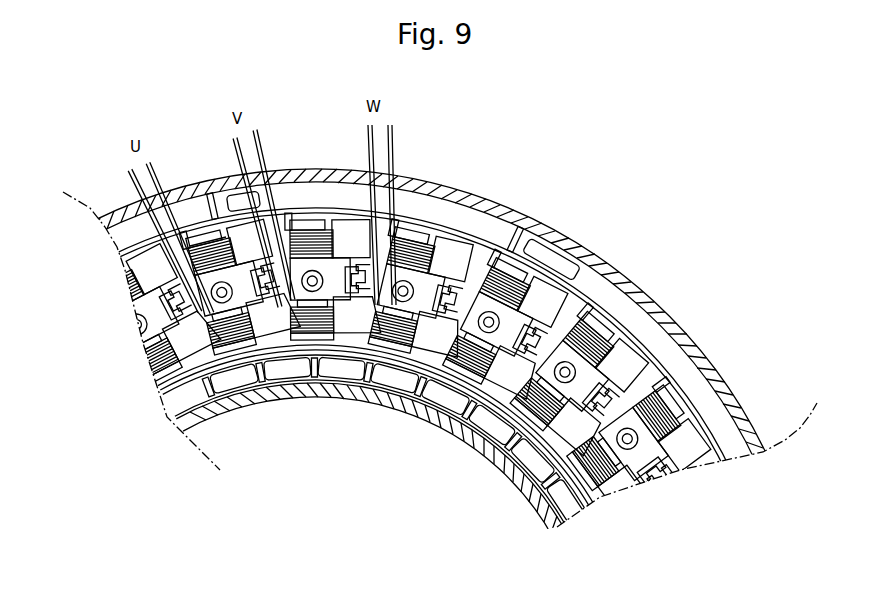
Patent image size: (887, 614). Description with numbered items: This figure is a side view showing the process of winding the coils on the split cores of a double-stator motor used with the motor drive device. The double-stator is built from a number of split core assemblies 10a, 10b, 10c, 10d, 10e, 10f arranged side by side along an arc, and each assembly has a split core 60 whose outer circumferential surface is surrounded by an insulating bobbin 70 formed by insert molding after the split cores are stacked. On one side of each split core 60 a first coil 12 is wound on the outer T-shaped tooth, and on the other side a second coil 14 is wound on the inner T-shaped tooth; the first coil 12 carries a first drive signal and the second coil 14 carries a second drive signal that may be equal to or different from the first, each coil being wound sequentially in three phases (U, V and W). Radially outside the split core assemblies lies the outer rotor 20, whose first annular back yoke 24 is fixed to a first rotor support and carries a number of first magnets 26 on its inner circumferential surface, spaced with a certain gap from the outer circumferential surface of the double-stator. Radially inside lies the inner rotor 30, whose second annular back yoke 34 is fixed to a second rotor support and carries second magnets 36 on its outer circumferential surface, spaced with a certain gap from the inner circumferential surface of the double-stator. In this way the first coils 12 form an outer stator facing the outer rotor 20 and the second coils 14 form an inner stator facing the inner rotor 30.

The split core assembly 10a is at (238, 249).
The split core assembly 10b is at (347, 240).
The split core assembly 10c is at (438, 265).
The split core assembly 10d is at (532, 299).
The split core assembly 10e is at (609, 368).
The split core assembly 10f is at (674, 443).
The first coil 12 is at (228, 236).
The second coil 14 is at (262, 356).
The outer rotor 20 is at (646, 273).
The first annular back yoke 24 is at (588, 264).
The first magnets 26 is at (548, 248).
The inner rotor 30 is at (405, 386).
The second annular back yoke 34 is at (460, 423).
The second magnets 36 is at (389, 384).
The split core 60 is at (281, 356).
The insulating bobbin 70 is at (203, 372).